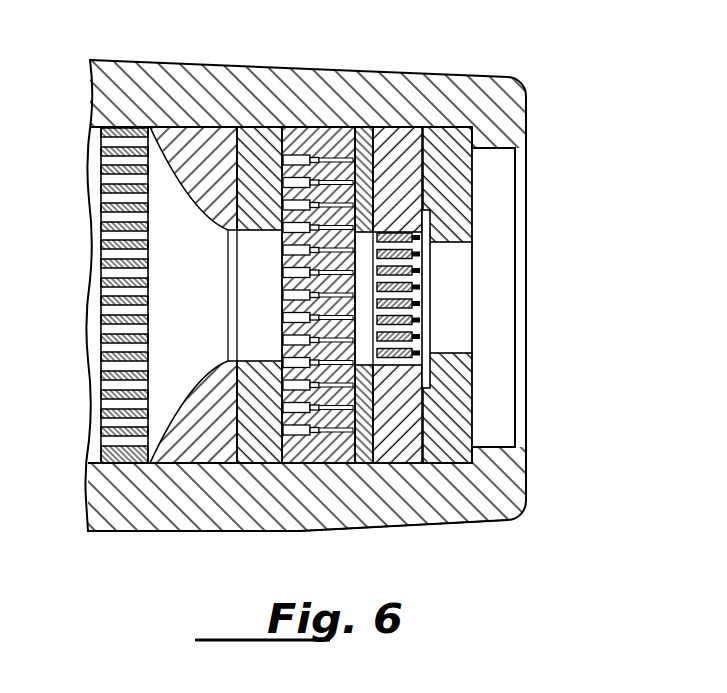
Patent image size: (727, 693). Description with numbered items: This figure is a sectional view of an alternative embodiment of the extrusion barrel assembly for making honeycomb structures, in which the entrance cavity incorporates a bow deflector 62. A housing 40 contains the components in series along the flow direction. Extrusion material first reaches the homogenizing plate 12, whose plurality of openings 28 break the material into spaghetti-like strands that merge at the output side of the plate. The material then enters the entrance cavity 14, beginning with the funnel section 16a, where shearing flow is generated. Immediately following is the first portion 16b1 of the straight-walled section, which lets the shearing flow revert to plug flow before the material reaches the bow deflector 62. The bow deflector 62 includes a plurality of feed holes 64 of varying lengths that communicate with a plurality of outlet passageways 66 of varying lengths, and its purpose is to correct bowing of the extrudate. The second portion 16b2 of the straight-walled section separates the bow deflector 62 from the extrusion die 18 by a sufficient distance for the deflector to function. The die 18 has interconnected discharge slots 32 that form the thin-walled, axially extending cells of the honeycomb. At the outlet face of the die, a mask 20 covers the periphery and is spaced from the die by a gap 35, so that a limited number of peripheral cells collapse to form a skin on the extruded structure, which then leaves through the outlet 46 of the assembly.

The homogenizing plate 12 is at (122, 459).
The entrance cavity 14 is at (170, 302).
The funnel section 16a is at (190, 138).
The first portion of the straight-walled section 16b1 is at (257, 140).
The second portion of the straight-walled section 16b2 is at (405, 138).
The extrusion die 18 is at (460, 202).
The mask 20 is at (473, 190).
The openings 28 is at (120, 372).
The discharge slots 32 is at (421, 320).
The gap 35 is at (432, 233).
The housing 40 is at (453, 500).
The outlet 46 is at (493, 391).
The bow deflector 62 is at (326, 302).
The feed holes 64 is at (300, 410).
The outlet passageways 66 is at (352, 425).